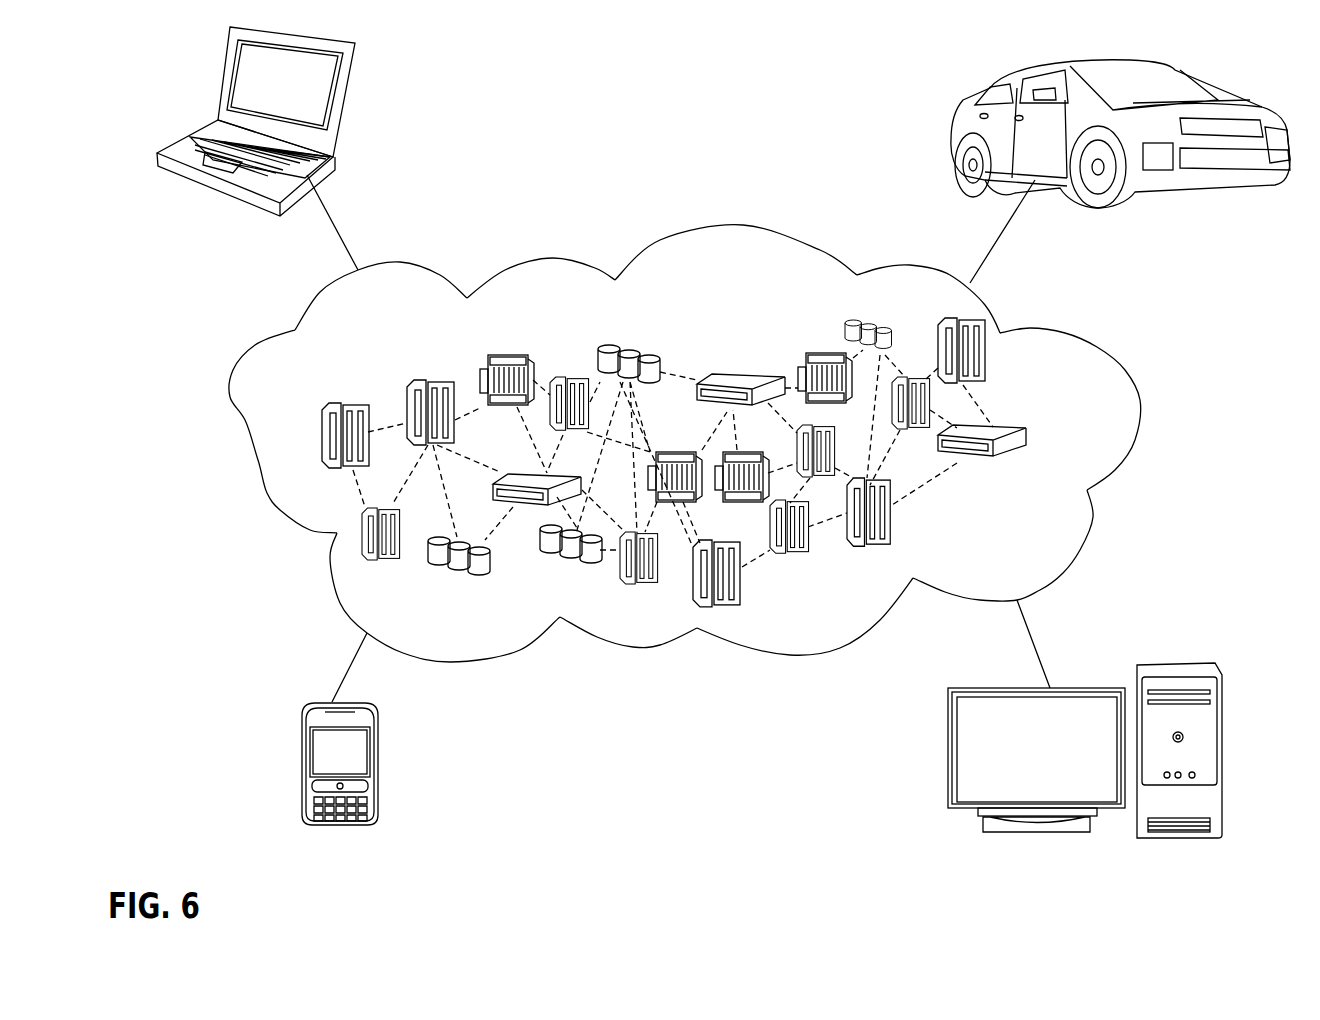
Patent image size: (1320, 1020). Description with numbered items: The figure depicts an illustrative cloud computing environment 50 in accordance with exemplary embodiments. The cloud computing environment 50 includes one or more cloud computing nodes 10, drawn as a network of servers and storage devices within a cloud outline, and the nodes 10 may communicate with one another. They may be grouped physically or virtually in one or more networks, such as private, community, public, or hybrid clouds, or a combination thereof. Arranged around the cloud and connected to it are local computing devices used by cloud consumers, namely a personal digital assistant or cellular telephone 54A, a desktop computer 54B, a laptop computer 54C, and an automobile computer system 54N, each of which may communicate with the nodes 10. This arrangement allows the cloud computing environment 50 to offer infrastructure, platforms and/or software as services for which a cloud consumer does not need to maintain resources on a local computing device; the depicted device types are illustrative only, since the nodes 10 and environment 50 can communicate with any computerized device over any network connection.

The cloud computing nodes 10 is at (1070, 437).
The cloud computing environment 50 is at (1097, 347).
The personal digital assistant (PDA) or cellular telephone 54A is at (300, 765).
The desktop computer 54B is at (1180, 663).
The laptop computer 54C is at (347, 100).
The automobile computer system 54N is at (958, 112).